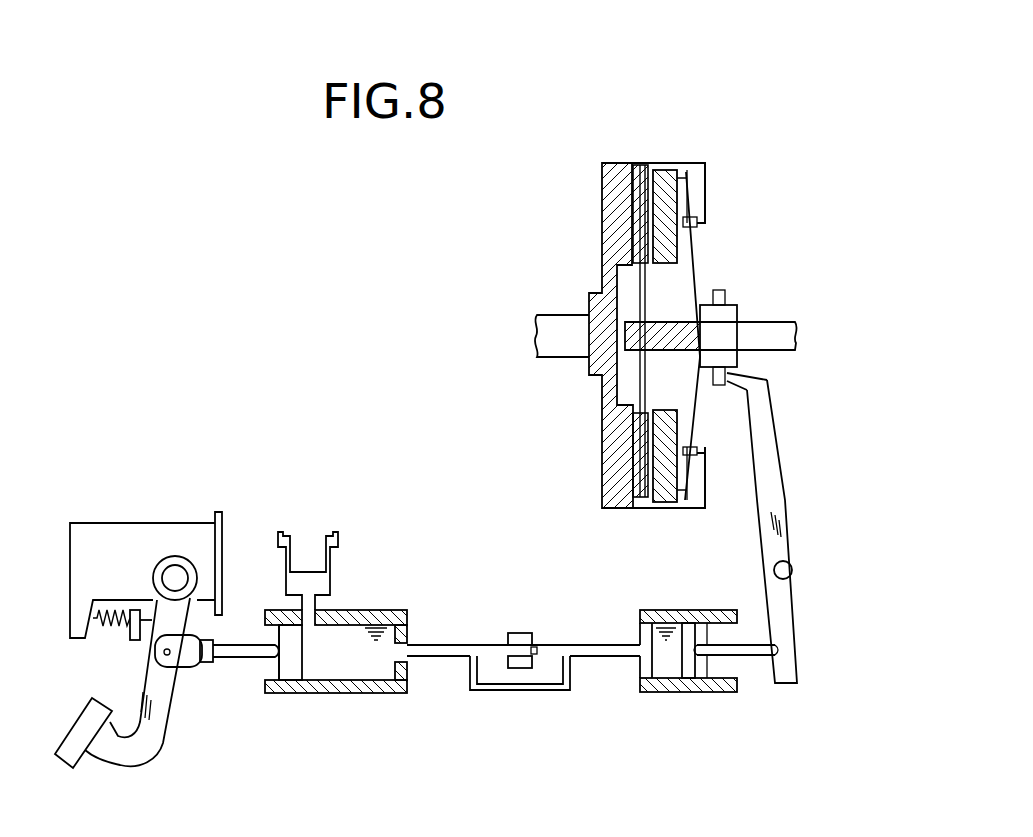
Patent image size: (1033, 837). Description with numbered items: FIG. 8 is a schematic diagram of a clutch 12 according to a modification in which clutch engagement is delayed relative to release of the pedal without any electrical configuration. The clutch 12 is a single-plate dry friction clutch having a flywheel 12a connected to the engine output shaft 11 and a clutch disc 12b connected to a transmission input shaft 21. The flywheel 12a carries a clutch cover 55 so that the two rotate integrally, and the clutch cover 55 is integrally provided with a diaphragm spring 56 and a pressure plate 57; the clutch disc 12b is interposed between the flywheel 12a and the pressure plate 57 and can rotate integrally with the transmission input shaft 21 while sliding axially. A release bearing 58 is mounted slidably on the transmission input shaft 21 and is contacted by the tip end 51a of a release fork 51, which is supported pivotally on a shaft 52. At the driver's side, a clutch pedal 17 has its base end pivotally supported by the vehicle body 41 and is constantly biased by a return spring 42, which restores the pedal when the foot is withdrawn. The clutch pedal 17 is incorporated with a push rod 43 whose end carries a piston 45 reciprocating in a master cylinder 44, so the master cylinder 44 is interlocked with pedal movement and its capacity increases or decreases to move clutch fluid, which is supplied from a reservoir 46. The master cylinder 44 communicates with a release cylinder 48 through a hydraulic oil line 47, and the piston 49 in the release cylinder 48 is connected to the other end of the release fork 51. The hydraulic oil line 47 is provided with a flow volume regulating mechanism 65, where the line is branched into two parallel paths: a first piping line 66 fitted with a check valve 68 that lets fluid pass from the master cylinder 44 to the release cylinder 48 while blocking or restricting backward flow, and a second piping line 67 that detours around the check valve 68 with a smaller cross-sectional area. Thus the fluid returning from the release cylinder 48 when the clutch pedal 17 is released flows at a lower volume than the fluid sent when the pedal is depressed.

The engine output shaft 11 is at (548, 315).
The clutch 12 is at (300, 366).
The flywheel 12a is at (612, 163).
The clutch disc 12b is at (640, 163).
The clutch pedal 17 is at (140, 757).
The transmission input shaft 21 is at (792, 322).
The vehicle body 41 is at (137, 523).
The return spring 42 is at (107, 625).
The push rod 43 is at (232, 658).
The master cylinder 44 is at (352, 693).
The piston 45 is at (292, 675).
The reservoir 46 is at (338, 538).
The hydraulic oil line 47 is at (603, 658).
The release cylinder 48 is at (670, 693).
The piston 49 is at (693, 670).
The release fork 51 is at (787, 685).
The tip end 51a is at (760, 372).
The shaft 52 is at (797, 562).
The clutch cover 55 is at (705, 190).
The diaphragm spring 56 is at (692, 240).
The pressure plate 57 is at (664, 168).
The release bearing 58 is at (725, 295).
The flow volume regulating mechanism 65 is at (540, 622).
The first piping line 66 is at (487, 644).
The second piping line 67 is at (467, 675).
The check valve 68 is at (517, 633).